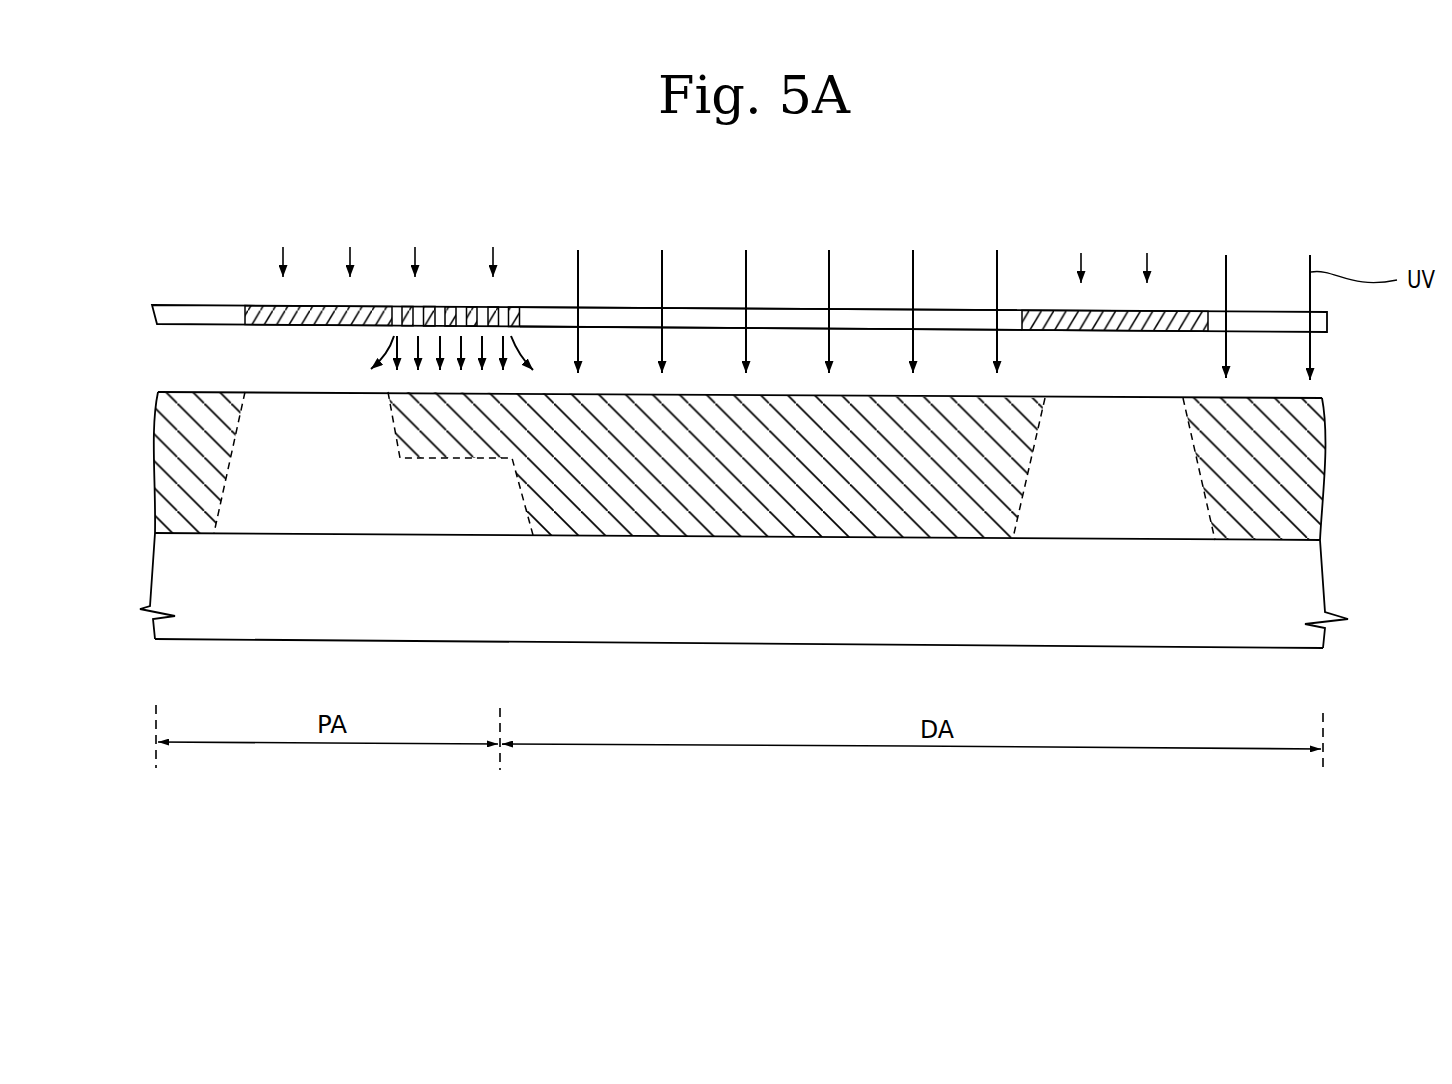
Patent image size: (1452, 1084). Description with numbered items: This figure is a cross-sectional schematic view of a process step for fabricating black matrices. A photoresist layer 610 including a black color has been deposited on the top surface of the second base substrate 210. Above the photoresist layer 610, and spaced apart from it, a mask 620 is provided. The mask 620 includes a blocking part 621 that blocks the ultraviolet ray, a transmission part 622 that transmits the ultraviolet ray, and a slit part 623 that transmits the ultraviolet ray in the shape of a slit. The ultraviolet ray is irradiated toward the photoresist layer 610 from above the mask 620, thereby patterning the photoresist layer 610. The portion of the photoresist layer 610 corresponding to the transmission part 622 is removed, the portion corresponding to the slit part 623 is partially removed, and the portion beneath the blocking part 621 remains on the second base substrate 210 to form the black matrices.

The second base substrate 210 is at (1302, 575).
The photoresist layer 610 is at (1302, 463).
The mask 620 is at (1327, 318).
The blocking part 621 is at (310, 305).
The transmission part 622 is at (782, 317).
The slit part 623 is at (520, 296).